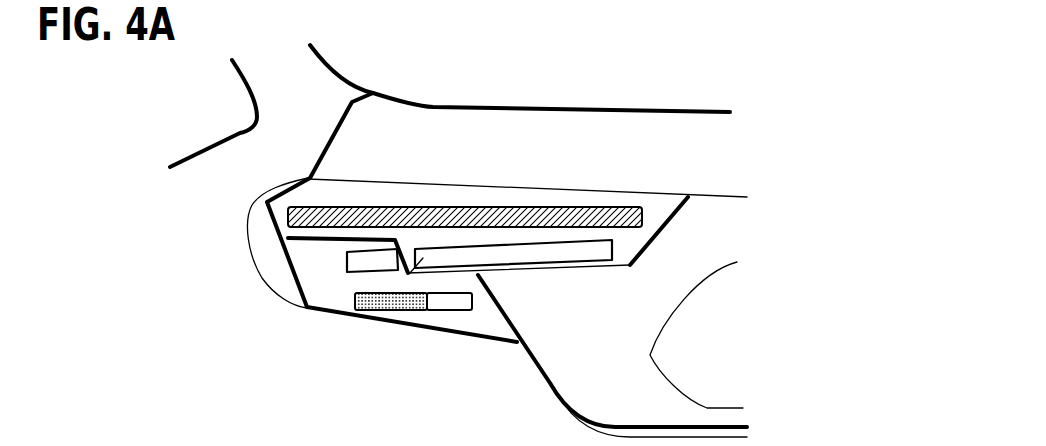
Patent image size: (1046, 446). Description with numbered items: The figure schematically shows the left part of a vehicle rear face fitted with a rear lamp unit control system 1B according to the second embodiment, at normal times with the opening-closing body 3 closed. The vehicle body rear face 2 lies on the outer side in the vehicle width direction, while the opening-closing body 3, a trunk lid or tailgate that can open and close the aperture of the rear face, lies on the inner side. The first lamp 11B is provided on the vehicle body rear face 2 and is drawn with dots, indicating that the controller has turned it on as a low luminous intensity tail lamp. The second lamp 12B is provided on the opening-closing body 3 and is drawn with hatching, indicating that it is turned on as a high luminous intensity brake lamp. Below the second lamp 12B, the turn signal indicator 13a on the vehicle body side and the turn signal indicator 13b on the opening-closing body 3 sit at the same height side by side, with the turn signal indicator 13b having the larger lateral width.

The rear lamp unit control system 1B is at (498, 88).
The vehicle body rear face 2 is at (270, 97).
The opening-closing body 3 is at (593, 132).
The first lamp 11B is at (355, 301).
The second lamp 12B is at (288, 222).
The turn signal indicator 13a is at (363, 260).
The turn signal indicator 13b is at (408, 273).